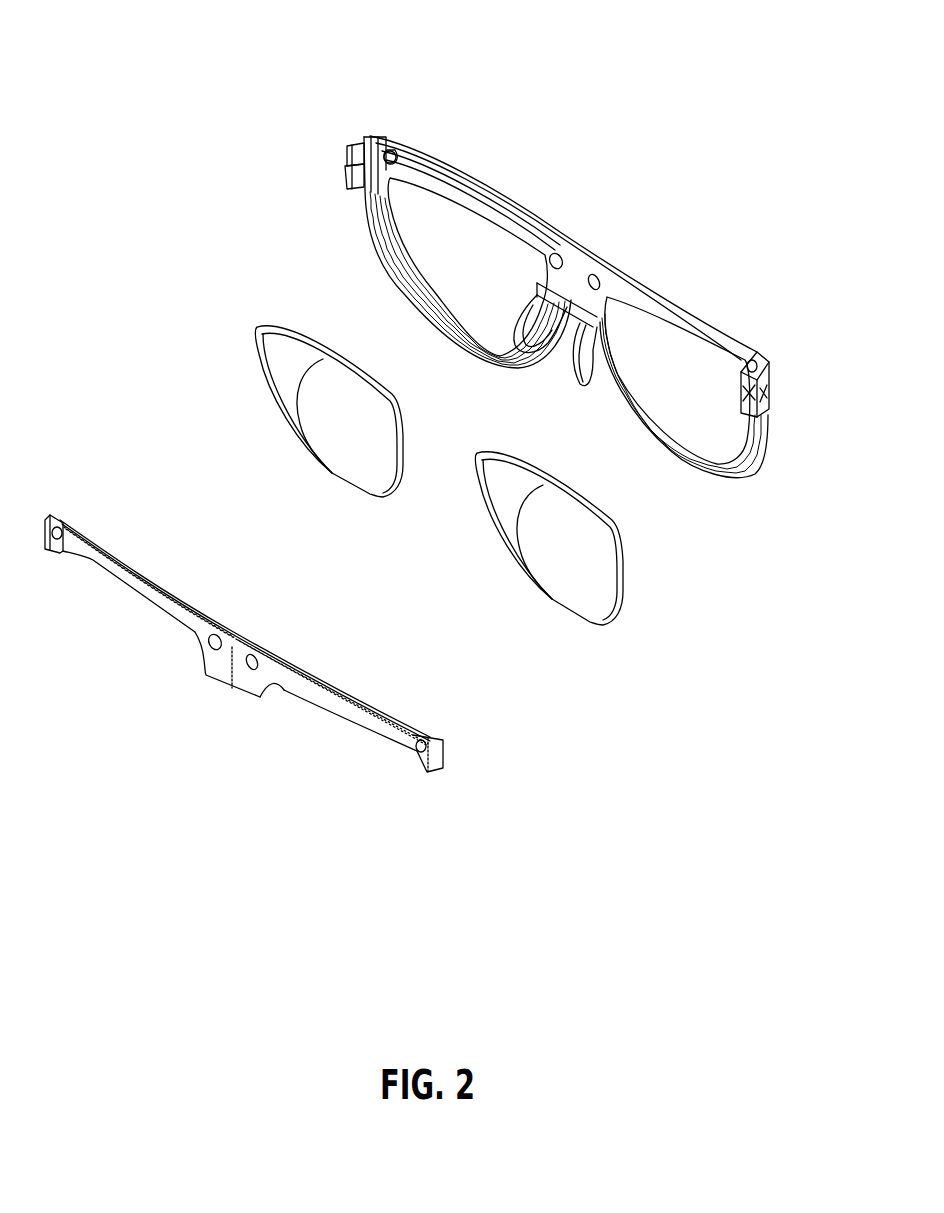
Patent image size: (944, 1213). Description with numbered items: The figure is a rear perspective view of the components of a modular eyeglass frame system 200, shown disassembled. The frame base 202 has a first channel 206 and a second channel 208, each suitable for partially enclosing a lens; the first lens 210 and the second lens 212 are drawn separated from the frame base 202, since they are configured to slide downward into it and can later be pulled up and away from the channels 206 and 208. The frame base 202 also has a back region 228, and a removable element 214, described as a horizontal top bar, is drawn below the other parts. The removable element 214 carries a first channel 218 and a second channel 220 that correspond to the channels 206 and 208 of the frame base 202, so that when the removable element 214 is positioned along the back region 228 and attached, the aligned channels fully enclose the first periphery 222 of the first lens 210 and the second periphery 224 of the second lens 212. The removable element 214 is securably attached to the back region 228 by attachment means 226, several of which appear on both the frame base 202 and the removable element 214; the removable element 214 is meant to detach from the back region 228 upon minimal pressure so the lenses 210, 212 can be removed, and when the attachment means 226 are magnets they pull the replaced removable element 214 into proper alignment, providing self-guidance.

The eyeglass frame system 200 is at (90, 64).
The frame base 202 is at (790, 397).
The first channel 206 is at (677, 451).
The second channel 208 is at (460, 328).
The first lens 210 is at (564, 550).
The second lens 212 is at (343, 425).
The removable element 214 is at (451, 764).
The first channel of the removable element 218 is at (348, 708).
The second channel of the removable element 220 is at (130, 587).
The first periphery 222 is at (578, 498).
The second periphery 224 is at (356, 365).
The attachment means 226 is at (391, 152).
The back region 228 is at (583, 290).